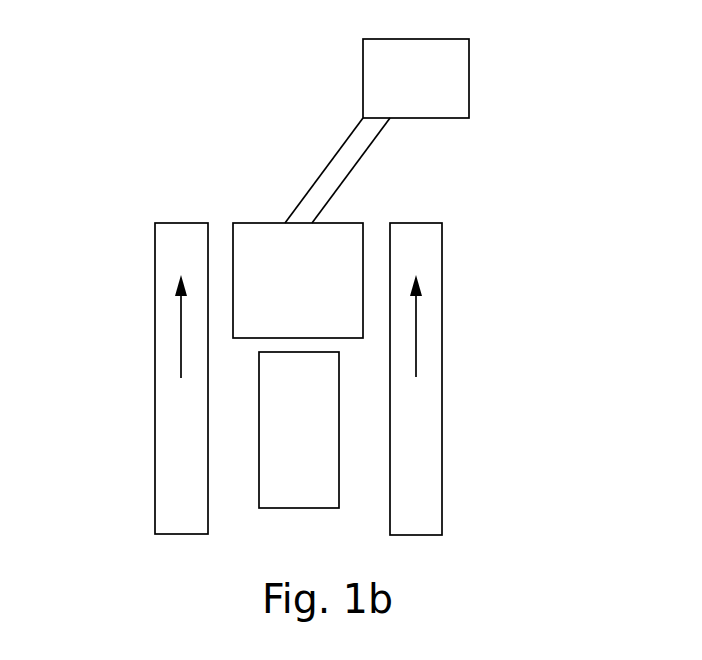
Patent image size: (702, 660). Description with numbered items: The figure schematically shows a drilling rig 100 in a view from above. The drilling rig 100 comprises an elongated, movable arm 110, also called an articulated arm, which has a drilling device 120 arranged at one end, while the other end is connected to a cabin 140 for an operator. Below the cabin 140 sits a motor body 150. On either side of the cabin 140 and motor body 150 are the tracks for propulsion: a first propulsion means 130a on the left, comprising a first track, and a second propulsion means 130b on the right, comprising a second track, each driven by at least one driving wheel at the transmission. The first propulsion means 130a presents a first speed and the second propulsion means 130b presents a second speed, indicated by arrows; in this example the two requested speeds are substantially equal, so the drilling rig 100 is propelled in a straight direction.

The drilling rig 100 is at (163, 128).
The movable arm 110 is at (357, 163).
The drilling device 120 is at (469, 78).
The first propulsion means 130a is at (155, 383).
The second propulsion means 130b is at (442, 380).
The cabin 140 is at (258, 222).
The motor body 150 is at (302, 509).